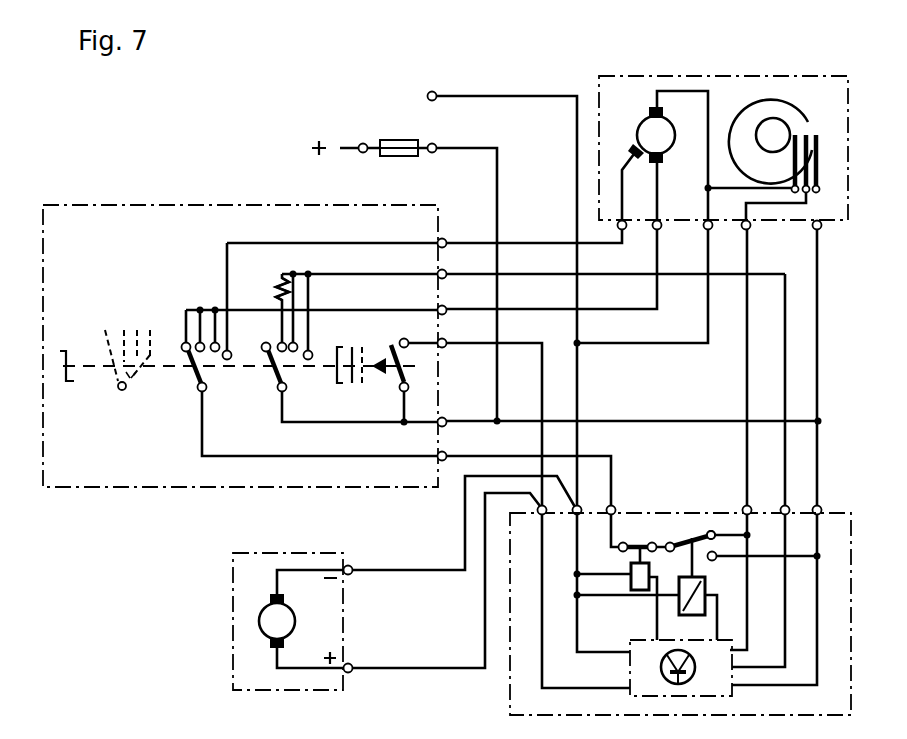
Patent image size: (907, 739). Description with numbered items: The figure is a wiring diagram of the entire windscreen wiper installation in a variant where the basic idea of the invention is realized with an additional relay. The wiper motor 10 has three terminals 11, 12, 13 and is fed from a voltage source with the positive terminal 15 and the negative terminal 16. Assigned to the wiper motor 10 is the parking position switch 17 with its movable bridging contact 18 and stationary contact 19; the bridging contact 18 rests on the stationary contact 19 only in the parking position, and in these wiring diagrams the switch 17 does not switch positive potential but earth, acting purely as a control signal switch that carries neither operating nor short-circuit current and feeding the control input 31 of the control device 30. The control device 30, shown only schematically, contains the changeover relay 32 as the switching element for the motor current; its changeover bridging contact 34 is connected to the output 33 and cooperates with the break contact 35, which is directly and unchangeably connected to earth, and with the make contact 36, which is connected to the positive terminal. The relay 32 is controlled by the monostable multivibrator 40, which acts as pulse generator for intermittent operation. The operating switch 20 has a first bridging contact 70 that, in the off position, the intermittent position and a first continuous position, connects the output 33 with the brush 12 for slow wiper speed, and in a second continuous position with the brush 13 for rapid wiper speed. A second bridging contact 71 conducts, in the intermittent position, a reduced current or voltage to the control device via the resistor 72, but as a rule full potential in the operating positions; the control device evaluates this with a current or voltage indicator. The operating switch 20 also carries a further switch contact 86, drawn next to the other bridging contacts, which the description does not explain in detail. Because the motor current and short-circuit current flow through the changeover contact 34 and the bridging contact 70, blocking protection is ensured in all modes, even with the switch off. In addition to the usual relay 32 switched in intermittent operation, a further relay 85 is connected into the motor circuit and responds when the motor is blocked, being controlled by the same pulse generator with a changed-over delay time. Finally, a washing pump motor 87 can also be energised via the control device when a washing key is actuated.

The wiper motor 10 is at (641, 126).
The terminal 11 is at (662, 112).
The brush 12 is at (662, 158).
The brush 13 is at (639, 160).
The positive terminal 15 is at (362, 144).
The negative terminal 16 is at (436, 93).
The parking position switch 17 is at (820, 110).
The movable bridging contact 18 is at (820, 161).
The stationary contact 19 is at (793, 150).
The operating switch 20 is at (157, 469).
The control device 30 is at (838, 606).
The control input 31 is at (749, 506).
The changeover relay 32 is at (702, 604).
The output 33 is at (614, 506).
The changeover bridging contact 34 is at (683, 538).
The break contact 35 is at (764, 574).
The make contact 36 is at (733, 530).
The monostable multivibrator 40 is at (730, 683).
The first bridging contact 70 is at (196, 380).
The second bridging contact 71 is at (275, 381).
The resistor 72 is at (279, 289).
The further relay 85 is at (637, 591).
The washer pump switch 86 is at (412, 366).
The washing pump motor 87 is at (297, 622).